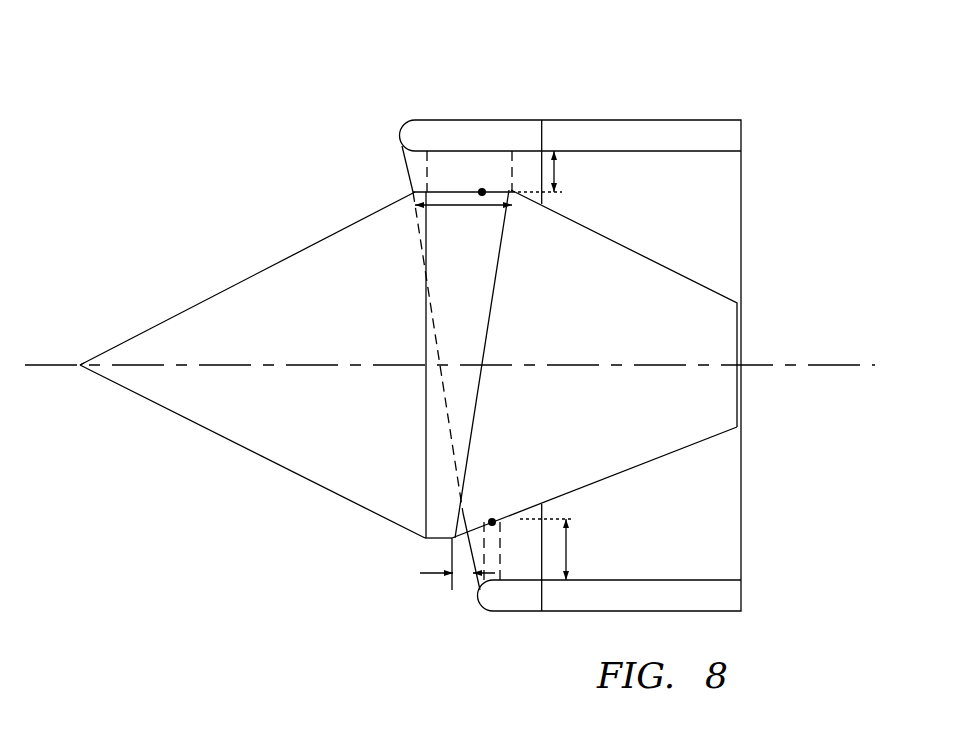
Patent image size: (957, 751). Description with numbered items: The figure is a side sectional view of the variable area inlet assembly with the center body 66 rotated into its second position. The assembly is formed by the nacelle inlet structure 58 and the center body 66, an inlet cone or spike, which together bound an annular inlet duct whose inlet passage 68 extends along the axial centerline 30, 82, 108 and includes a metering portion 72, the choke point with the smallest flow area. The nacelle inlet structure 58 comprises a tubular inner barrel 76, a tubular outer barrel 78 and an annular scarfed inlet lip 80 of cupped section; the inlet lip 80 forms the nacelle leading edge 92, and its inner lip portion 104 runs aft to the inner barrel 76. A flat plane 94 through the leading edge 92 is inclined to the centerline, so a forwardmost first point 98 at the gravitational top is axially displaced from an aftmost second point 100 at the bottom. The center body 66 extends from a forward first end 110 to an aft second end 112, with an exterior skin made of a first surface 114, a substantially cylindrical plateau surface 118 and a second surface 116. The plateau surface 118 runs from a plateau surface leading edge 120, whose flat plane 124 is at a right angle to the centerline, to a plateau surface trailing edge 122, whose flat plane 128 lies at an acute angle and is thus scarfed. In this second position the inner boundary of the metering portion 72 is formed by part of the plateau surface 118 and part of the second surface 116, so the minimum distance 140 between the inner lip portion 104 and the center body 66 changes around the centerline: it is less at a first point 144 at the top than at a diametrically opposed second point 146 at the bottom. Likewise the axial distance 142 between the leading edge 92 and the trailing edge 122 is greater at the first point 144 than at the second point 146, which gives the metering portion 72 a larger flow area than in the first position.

The axial centerline 30 is at (460, 323).
The nacelle inlet structure 58 is at (736, 105).
The center body 66 is at (203, 448).
The inlet passage 68 is at (645, 228).
The metering portion 72 is at (440, 157).
The inner barrel 76 is at (688, 153).
The outer barrel 78 is at (650, 119).
The inlet lip 80 is at (508, 103).
The axial centerline 82 is at (460, 323).
The nacelle leading edge 92 is at (394, 187).
The flat plane 94 is at (401, 172).
The first point 98 is at (400, 136).
The second point 100 is at (480, 591).
The inner lip portion 104 is at (483, 152).
The axial centerline 108 is at (803, 364).
The first end 110 is at (80, 368).
The second end 112 is at (740, 407).
The first surface 114 is at (318, 488).
The second surface 116 is at (640, 468).
The plateau surface 118 is at (433, 540).
The plateau surface leading edge 120 is at (367, 365).
The plateau surface trailing edge 122 is at (547, 364).
The flat plane 124 is at (425, 438).
The flat plane 128 is at (480, 396).
The minimum distance 140 is at (558, 170).
The axial distance 142 is at (470, 208).
The first point 144 is at (482, 191).
The second point 146 is at (492, 520).